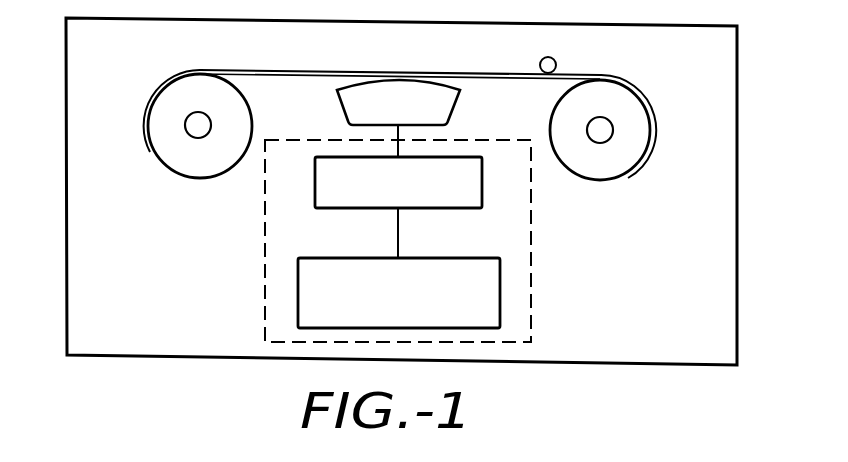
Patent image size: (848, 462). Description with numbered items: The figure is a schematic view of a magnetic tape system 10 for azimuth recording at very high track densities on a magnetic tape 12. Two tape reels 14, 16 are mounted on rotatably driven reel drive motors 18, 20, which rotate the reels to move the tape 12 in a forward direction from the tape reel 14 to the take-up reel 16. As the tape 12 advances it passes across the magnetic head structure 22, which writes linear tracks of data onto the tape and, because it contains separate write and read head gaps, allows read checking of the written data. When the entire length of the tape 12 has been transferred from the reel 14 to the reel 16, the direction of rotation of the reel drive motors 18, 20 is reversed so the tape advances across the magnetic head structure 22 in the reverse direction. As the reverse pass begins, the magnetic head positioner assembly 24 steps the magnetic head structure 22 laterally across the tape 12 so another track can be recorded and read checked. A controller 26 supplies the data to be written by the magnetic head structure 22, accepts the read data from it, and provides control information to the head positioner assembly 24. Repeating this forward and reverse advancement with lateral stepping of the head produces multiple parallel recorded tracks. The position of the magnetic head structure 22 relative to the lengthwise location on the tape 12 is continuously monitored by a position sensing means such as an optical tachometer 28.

The magnetic tape system 10 is at (752, 310).
The magnetic tape 12 is at (458, 68).
The tape reel 14 is at (148, 130).
The take-up reel 16 is at (647, 147).
The reel drive motor 18 is at (188, 132).
The reel drive motor 20 is at (609, 140).
The magnetic head structure 22 is at (457, 100).
The magnetic head positioner assembly 24 is at (483, 190).
The controller 26 is at (501, 298).
The optical tachometer 28 is at (556, 60).